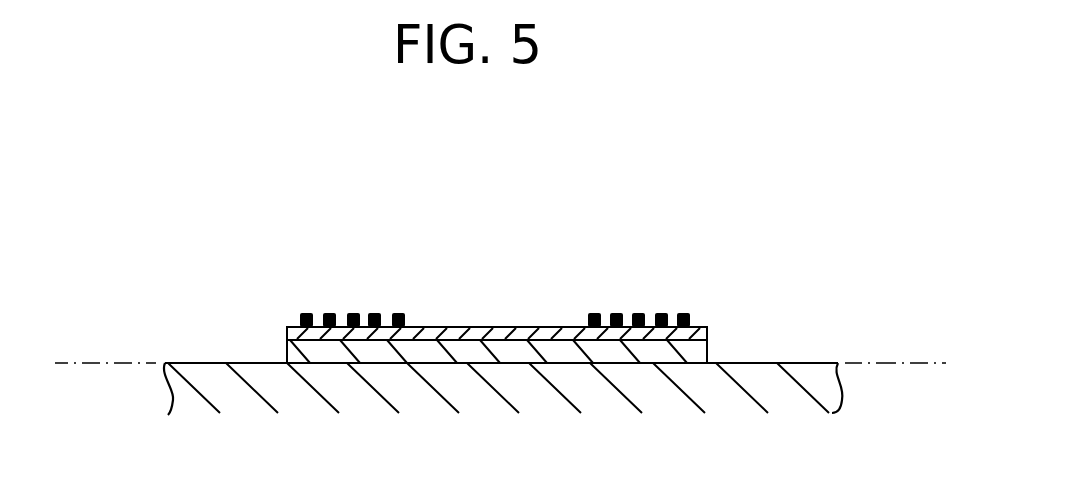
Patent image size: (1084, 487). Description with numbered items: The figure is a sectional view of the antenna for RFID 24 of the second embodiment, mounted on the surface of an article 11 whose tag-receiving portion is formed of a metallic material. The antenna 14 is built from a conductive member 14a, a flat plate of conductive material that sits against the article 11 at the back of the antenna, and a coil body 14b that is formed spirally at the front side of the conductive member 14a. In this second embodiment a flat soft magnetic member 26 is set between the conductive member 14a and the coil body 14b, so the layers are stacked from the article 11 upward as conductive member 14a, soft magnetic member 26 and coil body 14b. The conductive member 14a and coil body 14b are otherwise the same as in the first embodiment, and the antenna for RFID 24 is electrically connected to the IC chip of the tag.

The article 11 is at (807, 362).
The antenna for RFID 14 is at (534, 256).
The conductive member 14a is at (708, 343).
The coil body 14b is at (635, 312).
The antenna for RFID 24 is at (252, 341).
The soft magnetic member 26 is at (287, 337).